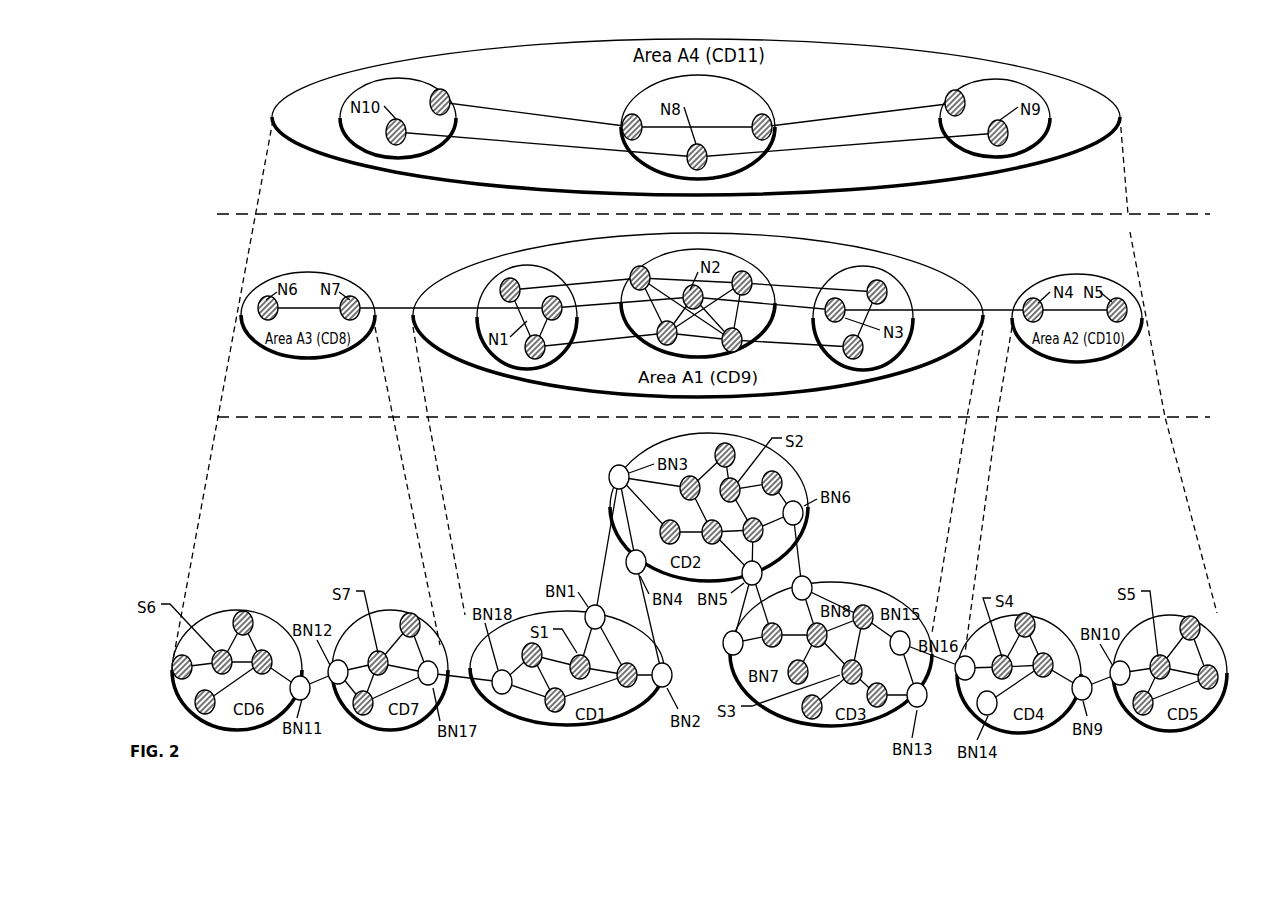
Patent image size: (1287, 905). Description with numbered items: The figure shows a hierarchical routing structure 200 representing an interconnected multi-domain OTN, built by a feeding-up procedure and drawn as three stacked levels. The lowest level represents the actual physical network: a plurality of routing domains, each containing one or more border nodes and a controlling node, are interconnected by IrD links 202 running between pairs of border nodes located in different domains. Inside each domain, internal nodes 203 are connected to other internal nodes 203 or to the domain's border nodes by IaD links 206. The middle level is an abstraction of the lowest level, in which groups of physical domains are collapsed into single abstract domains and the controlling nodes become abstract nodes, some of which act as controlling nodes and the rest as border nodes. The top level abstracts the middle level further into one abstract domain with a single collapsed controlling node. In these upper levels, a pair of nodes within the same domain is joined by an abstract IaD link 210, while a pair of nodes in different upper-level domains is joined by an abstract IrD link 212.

The hierarchical routing structure 200 is at (1182, 88).
The IrD link 202 is at (322, 683).
The internal node 203 is at (247, 610).
The IaD link 206 is at (255, 640).
The abstract IaD link 210 is at (742, 120).
The abstract IrD link 212 is at (530, 112).